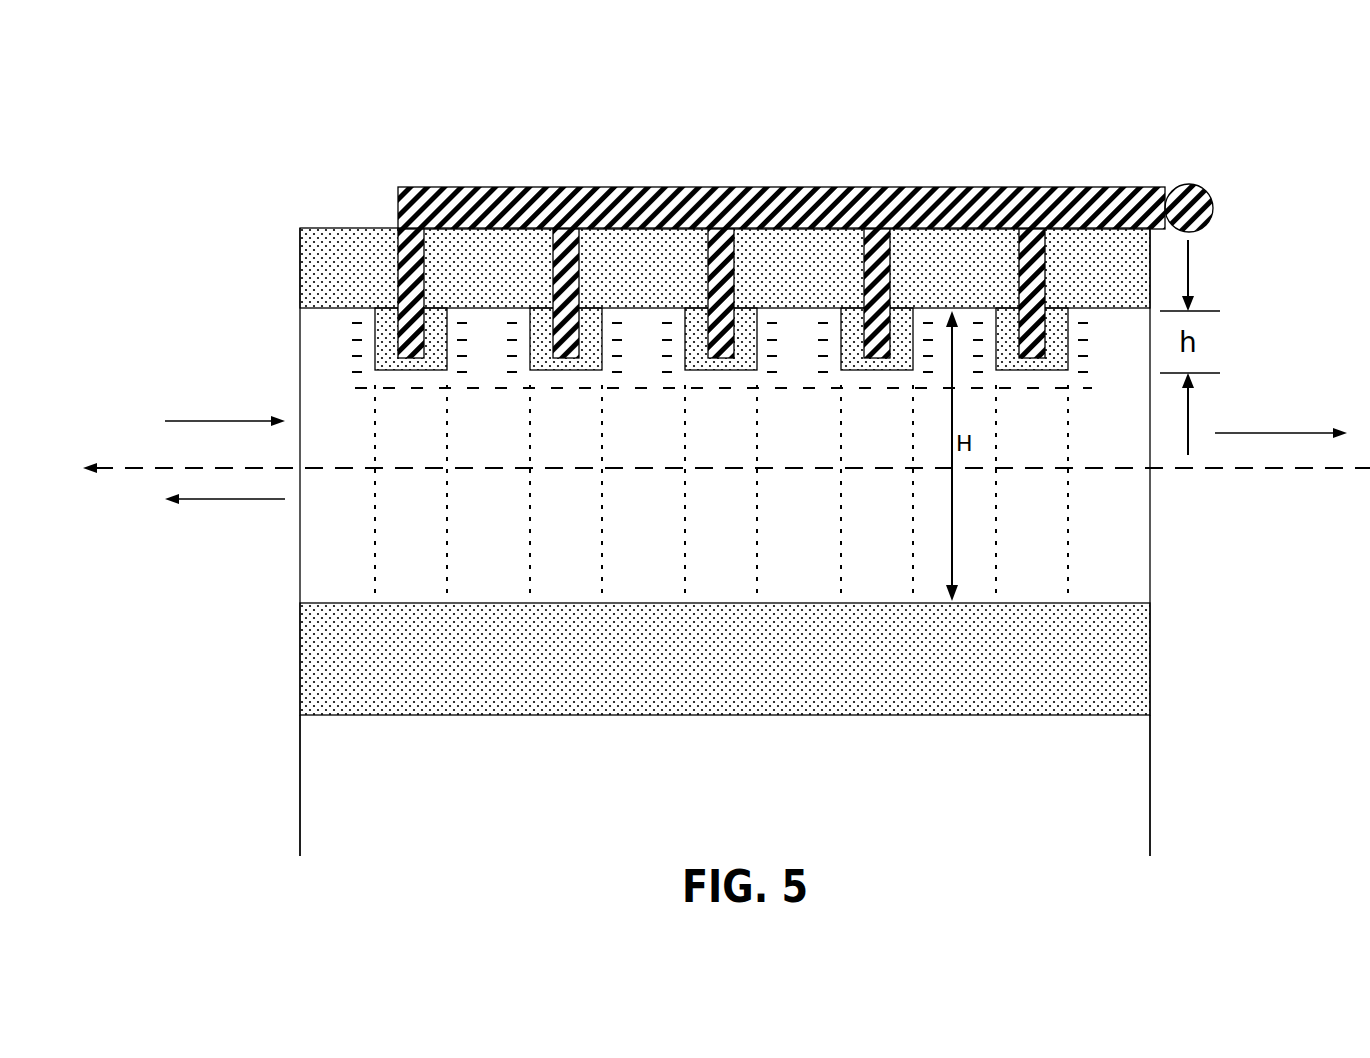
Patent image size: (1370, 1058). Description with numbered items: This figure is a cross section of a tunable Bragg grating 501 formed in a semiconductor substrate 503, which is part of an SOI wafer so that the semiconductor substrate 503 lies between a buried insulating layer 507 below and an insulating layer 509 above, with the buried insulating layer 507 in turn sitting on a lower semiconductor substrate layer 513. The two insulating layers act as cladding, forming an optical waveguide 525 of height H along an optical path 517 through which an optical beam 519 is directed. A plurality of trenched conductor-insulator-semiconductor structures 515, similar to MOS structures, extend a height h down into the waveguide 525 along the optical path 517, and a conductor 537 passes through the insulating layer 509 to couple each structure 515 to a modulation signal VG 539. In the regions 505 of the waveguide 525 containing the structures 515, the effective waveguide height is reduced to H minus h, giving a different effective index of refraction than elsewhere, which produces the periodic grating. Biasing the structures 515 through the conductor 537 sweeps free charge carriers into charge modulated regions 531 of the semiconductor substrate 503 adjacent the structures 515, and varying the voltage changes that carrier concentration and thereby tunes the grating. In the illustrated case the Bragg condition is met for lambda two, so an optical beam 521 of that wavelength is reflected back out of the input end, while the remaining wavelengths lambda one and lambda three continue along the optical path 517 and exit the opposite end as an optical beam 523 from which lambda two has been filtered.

The tunable Bragg grating 501 is at (1168, 114).
The semiconductor substrate 503 is at (1140, 572).
The regions of waveguide including structures 505 is at (425, 590).
The buried insulating layer 507 is at (1140, 660).
The insulating layer 509 is at (302, 263).
The semiconductor substrate layer 513 is at (1138, 806).
The conductor-insulator-semiconductor structure 515 is at (375, 369).
The optical path 517 is at (128, 450).
The optical beam 519 is at (218, 380).
The reflected optical beam 521 is at (200, 523).
The transmitted optical beam 523 is at (1290, 388).
The optical waveguide 525 is at (1194, 497).
The charge modulated region 531 is at (393, 392).
The conductor 537 is at (676, 188).
The modulation signal VG 539 is at (1250, 140).